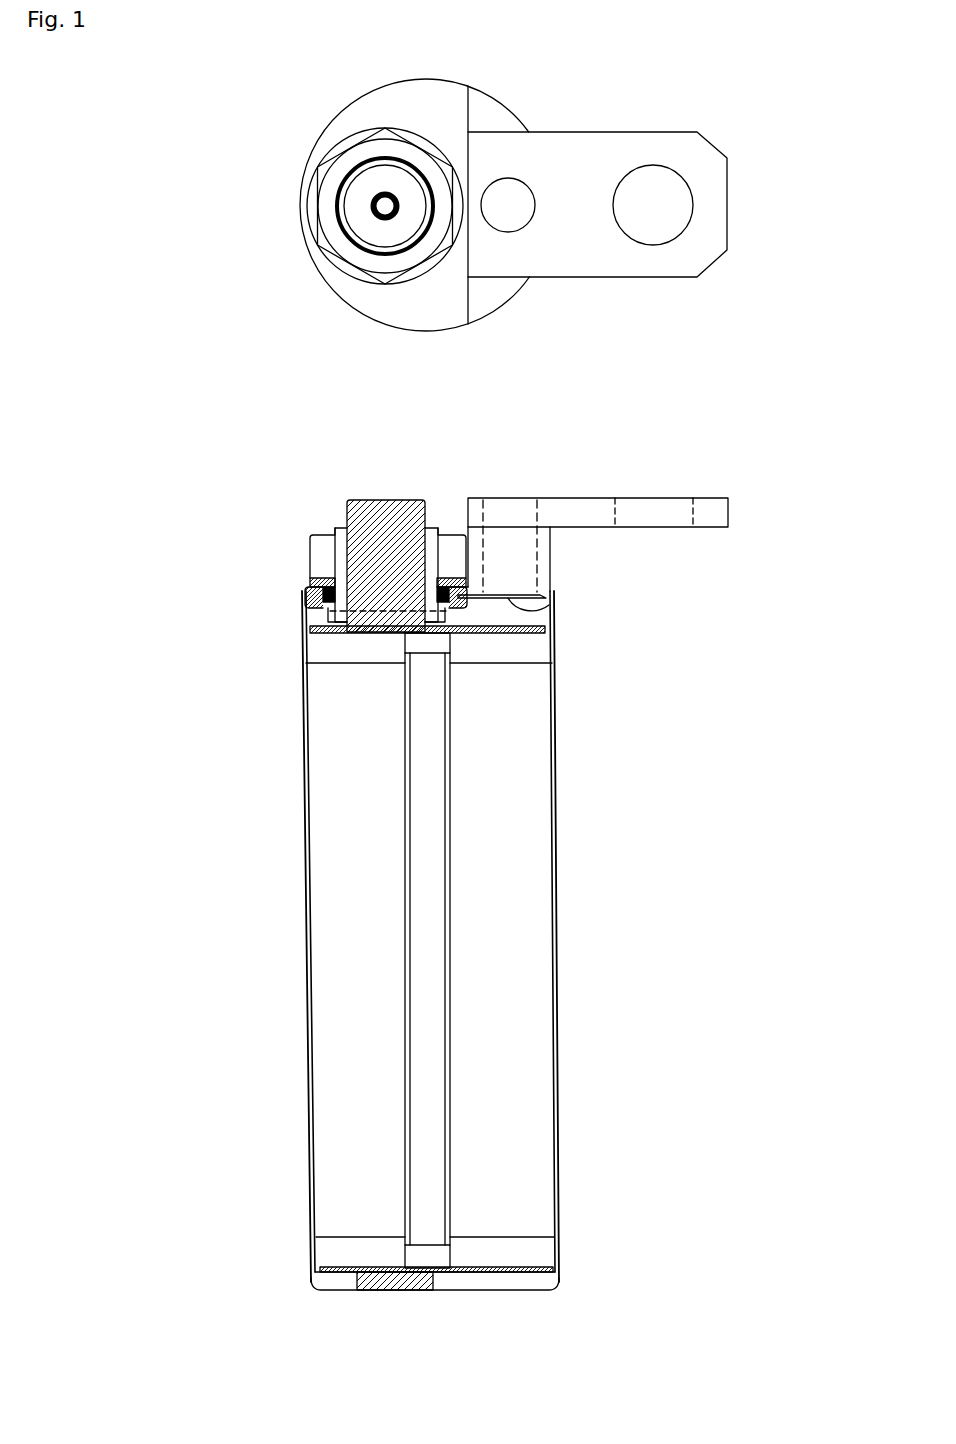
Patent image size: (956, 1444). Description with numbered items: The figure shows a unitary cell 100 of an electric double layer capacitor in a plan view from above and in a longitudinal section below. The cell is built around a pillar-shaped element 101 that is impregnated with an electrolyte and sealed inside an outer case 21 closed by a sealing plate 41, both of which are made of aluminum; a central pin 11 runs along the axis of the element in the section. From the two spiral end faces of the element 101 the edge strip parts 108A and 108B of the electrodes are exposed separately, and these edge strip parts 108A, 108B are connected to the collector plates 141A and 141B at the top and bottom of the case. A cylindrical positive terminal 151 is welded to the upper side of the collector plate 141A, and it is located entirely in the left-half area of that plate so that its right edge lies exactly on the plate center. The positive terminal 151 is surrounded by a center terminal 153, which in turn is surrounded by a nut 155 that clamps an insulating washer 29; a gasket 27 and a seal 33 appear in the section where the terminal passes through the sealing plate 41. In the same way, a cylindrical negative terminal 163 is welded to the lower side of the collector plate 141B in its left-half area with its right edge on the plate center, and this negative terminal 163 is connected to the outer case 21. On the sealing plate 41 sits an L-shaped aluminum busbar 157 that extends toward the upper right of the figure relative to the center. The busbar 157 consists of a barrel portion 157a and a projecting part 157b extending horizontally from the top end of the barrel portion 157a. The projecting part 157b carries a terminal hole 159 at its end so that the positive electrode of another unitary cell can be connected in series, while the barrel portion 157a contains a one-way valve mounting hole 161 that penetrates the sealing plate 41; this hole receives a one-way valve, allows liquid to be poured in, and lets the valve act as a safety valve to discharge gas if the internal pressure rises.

The unitary cell 100 is at (443, 420).
The element 101 is at (326, 810).
The center pin 11 is at (428, 950).
The outer case 21 is at (306, 1102).
The gasket 27 is at (308, 600).
The insulating washer 29 is at (327, 578).
The seal member 33 is at (323, 592).
The sealing plate 41 is at (552, 603).
The edge strip part 108A is at (325, 653).
The edge strip part 108B is at (332, 1250).
The collector plate 141A is at (322, 631).
The collector plate 141B is at (330, 1277).
The positive terminal 151 is at (368, 182).
The center terminal 153 is at (338, 208).
The nut 155 is at (346, 277).
The busbar 157 is at (615, 132).
The barrel portion 157a is at (544, 566).
The projecting part 157b is at (585, 496).
The terminal hole 159 is at (650, 167).
The one-way valve mounting hole 161 is at (507, 177).
The negative terminal 163 is at (393, 1291).